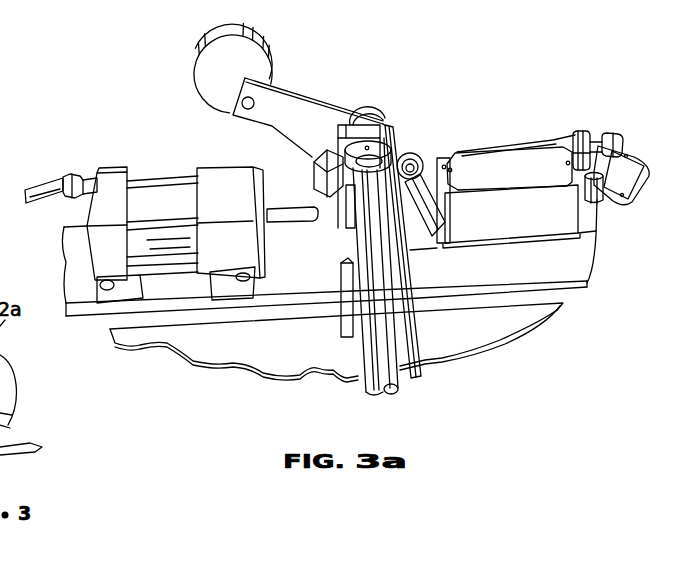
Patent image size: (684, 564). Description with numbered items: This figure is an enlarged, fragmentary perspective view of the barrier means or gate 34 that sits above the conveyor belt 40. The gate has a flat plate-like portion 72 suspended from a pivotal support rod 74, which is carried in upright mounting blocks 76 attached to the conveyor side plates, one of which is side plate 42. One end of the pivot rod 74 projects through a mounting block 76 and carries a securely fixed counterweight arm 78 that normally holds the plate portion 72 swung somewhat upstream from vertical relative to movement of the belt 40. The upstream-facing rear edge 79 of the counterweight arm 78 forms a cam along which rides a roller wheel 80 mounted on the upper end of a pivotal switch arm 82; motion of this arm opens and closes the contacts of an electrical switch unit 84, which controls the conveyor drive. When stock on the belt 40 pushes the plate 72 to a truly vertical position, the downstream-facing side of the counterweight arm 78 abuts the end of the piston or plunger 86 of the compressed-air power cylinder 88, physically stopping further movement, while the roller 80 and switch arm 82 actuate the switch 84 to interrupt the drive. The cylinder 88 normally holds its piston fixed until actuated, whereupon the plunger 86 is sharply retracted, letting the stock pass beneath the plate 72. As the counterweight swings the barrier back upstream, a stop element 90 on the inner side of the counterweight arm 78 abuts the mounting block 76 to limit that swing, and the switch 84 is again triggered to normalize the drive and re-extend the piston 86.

The gate 34 is at (416, 121).
The belt 40 is at (313, 350).
The plate-like portion 72 is at (414, 263).
The pivotal support rod 74 is at (367, 248).
The upright mounting block 76 is at (350, 127).
The counterweight arm 78 is at (282, 103).
The rear edge 79 is at (385, 128).
The roller wheel 80 is at (423, 159).
The pivotal switch arm 82 is at (420, 197).
The electrical switch unit 84 is at (542, 221).
The piston 86 is at (289, 209).
The power cylinder 88 is at (155, 195).
The stop element 90 is at (312, 160).
The side plate 42 is at (0, 143).